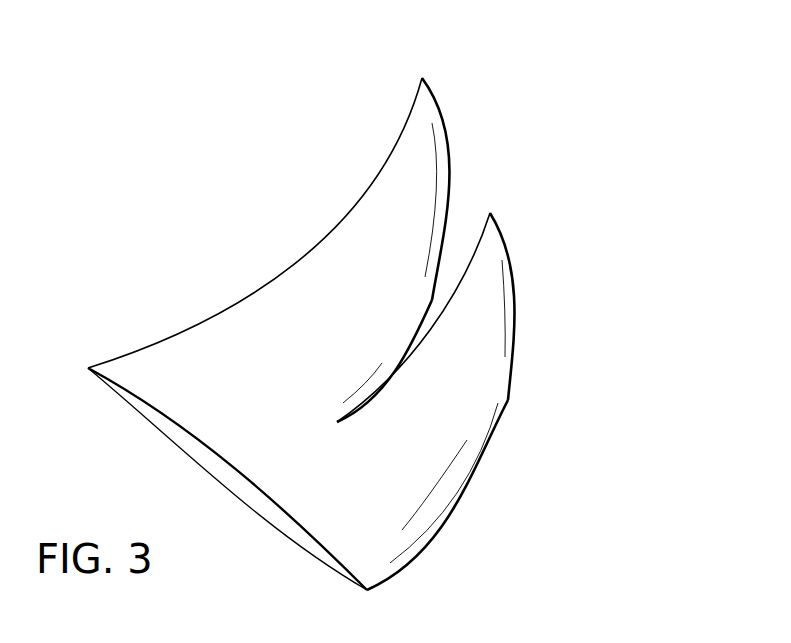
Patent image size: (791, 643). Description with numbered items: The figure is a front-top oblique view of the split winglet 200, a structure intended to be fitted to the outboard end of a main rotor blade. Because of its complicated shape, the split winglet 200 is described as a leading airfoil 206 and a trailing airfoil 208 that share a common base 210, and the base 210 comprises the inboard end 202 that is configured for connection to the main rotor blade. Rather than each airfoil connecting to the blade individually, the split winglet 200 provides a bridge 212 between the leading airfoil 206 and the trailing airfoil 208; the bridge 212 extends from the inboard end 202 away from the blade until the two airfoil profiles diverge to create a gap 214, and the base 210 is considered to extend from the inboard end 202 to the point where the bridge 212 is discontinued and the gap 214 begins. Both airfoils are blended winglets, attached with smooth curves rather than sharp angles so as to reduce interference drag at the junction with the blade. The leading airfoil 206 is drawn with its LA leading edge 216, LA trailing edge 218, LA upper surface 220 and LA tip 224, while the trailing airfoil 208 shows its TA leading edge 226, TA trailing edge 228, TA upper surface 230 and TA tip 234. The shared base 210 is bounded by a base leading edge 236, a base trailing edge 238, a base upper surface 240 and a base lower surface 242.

The split winglet 200 is at (220, 217).
The inboard end 202 is at (290, 530).
The leading airfoil 206 is at (520, 268).
The trailing airfoil 208 is at (372, 175).
The base 210 is at (437, 543).
The bridge 212 is at (270, 460).
The gap 214 is at (422, 343).
The LA leading edge 216 is at (517, 325).
The LA trailing edge 218 is at (415, 358).
The LA upper surface 220 is at (493, 381).
The LA tip 224 is at (490, 213).
The TA leading edge 226 is at (440, 122).
The TA trailing edge 228 is at (400, 128).
The TA upper surface 230 is at (368, 213).
The TA tip 234 is at (422, 78).
The base leading edge 236 is at (407, 567).
The base trailing edge 238 is at (212, 317).
The base upper surface 240 is at (160, 357).
The base lower surface 242 is at (317, 562).